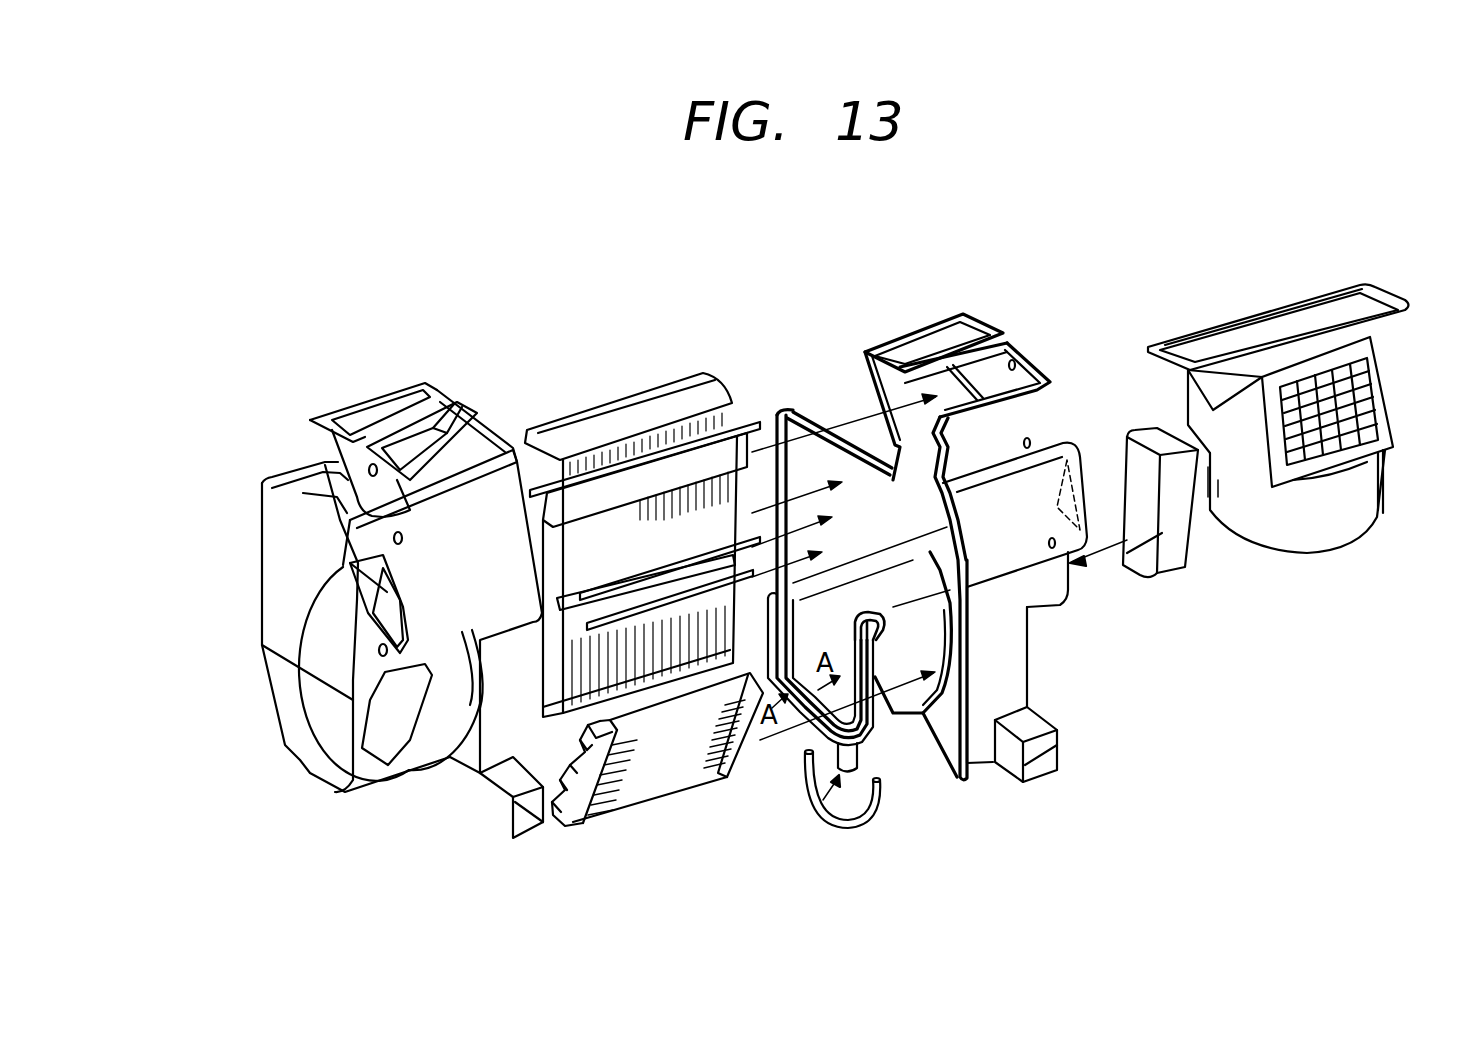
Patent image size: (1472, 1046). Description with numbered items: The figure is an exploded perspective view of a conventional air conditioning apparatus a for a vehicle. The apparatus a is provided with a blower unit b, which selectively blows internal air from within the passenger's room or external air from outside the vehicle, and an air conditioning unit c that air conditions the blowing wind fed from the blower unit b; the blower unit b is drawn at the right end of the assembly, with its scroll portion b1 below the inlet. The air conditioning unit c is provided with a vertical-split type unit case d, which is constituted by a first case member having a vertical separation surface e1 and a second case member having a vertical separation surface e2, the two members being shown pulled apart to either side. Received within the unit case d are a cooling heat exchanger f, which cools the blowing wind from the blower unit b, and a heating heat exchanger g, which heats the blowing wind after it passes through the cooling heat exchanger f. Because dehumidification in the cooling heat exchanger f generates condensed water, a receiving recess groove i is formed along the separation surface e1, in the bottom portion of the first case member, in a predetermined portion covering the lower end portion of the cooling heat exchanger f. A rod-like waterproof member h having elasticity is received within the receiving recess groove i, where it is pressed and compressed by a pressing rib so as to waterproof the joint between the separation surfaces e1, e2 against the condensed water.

The air conditioning apparatus a is at (1100, 250).
The blower unit b is at (1296, 302).
The blower fan scroll b1 is at (1380, 490).
The air conditioning unit c is at (912, 330).
The unit case d is at (402, 644).
The vertical separation surface e1 is at (948, 780).
The vertical separation surface e2 is at (438, 398).
The cooling heat exchanger f is at (618, 416).
The heating heat exchanger g is at (672, 775).
The waterproof member h is at (875, 815).
The receiving recess groove i is at (870, 710).